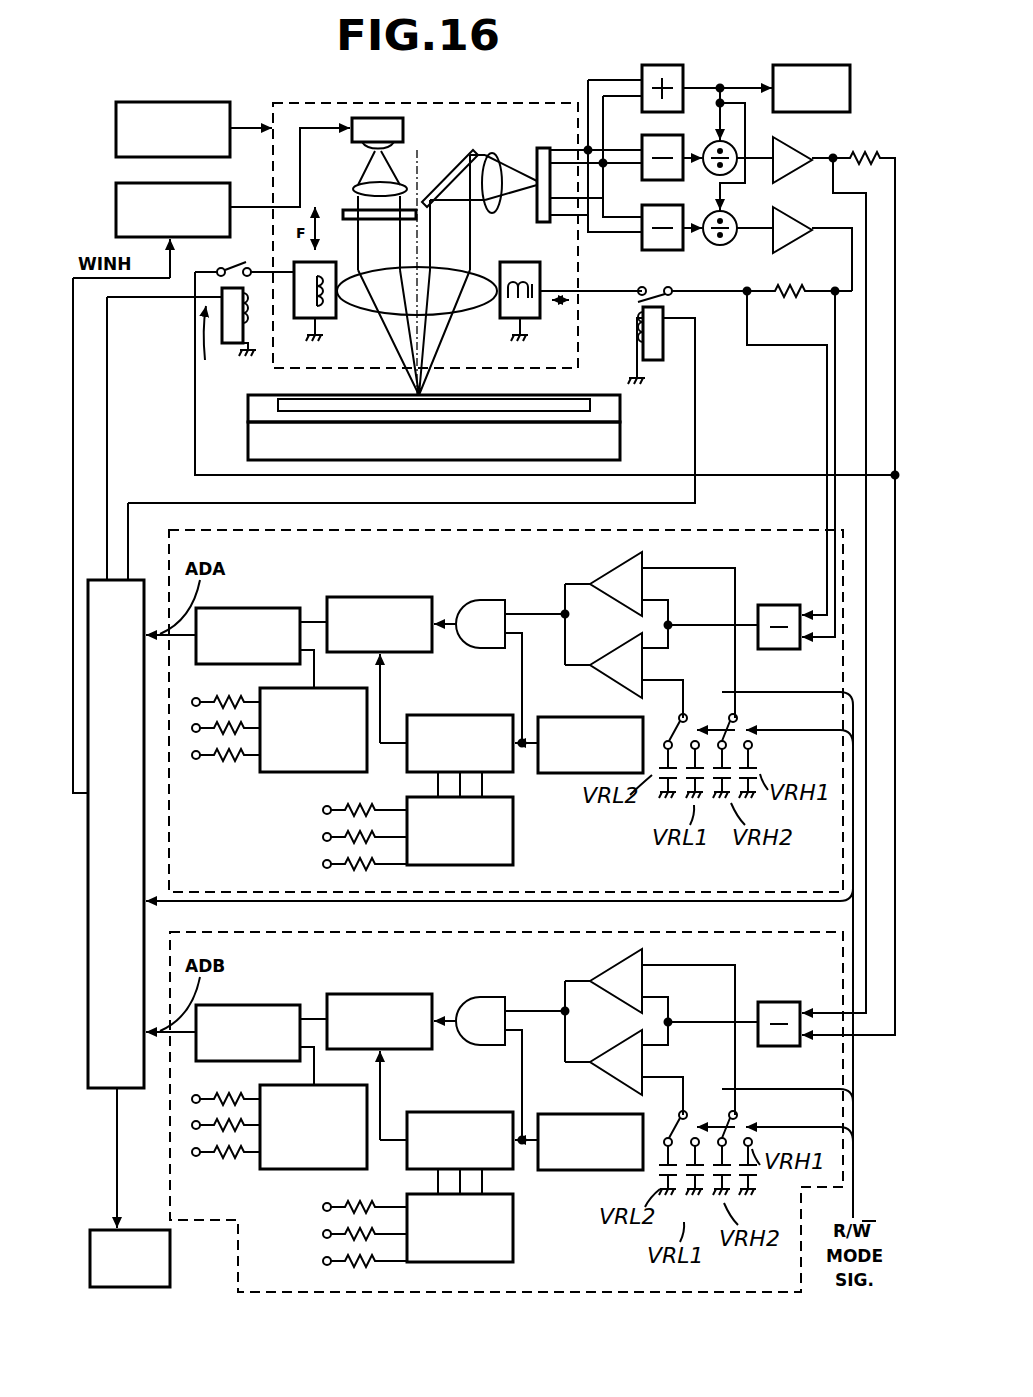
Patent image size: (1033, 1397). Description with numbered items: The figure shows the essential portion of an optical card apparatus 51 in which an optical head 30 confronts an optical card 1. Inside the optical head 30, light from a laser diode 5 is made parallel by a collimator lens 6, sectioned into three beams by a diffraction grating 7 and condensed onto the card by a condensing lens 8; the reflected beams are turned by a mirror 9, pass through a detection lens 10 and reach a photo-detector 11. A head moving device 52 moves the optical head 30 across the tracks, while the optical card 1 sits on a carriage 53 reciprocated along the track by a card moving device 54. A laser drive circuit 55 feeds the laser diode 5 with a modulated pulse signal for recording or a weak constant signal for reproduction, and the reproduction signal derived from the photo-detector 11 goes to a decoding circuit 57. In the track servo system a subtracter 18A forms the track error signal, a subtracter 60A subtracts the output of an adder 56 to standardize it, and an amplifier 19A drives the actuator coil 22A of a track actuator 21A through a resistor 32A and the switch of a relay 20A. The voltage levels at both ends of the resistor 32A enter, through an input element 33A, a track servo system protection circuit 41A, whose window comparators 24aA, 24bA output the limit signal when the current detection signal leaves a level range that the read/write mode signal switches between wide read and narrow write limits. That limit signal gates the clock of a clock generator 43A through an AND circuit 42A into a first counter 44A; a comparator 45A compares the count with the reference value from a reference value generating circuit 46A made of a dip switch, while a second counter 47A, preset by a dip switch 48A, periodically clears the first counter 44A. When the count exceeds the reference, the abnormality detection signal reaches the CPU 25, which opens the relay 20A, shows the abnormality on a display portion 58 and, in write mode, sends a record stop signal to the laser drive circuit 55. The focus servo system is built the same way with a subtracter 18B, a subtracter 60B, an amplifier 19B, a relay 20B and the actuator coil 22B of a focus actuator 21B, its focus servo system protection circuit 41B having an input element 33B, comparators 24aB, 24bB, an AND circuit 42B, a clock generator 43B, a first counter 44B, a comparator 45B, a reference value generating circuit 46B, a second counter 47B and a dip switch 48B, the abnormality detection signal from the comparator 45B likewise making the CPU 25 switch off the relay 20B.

The optical card 1 is at (448, 406).
The laser diode 5 is at (413, 124).
The collimator lens 6 is at (397, 183).
The diffraction grating 7 is at (342, 210).
The condensing lens 8 is at (358, 313).
The mirror 9 is at (452, 172).
The detection lens 10 is at (496, 214).
The photo-detector 11 is at (539, 149).
The subtracter 18A is at (640, 252).
The subtracter 18B is at (640, 182).
The amplifier 19A is at (800, 246).
The amplifier 19B is at (800, 150).
The relay 20A is at (678, 295).
The relay 20B is at (225, 341).
The track actuator 21A is at (500, 318).
The focus actuator 21B is at (296, 306).
The actuator coil 22A is at (545, 353).
The actuator coil 22B is at (272, 266).
The comparator 24aA is at (594, 569).
The comparator 24bA is at (597, 680).
The comparator 24aB is at (642, 1027).
The comparator 24bB is at (605, 1072).
The CPU 25 is at (138, 580).
The optical head 30 is at (576, 103).
The resistor 32A is at (788, 310).
The subtractor 33A is at (780, 605).
The subtractor 33B is at (781, 1002).
The track servo system protection circuit 41A is at (706, 532).
The focus servo system protection circuit 41B is at (406, 929).
The AND circuit 42A is at (470, 600).
The AND circuit 42B is at (501, 1043).
The clock generator 43A is at (556, 775).
The clock generator 43B is at (579, 1174).
The first counter 44A is at (408, 597).
The first counter 44B is at (379, 996).
The comparator 45A is at (281, 608).
The comparator 45B is at (236, 1021).
The reference value generating circuit 46A is at (256, 773).
The reference value generating circuit 46B is at (265, 1155).
The second counter 47A is at (469, 715).
The second counter 47B is at (446, 1110).
The dip switch 48A is at (513, 858).
The dip switch 48B is at (434, 1220).
The optical card apparatus 51 is at (238, 91).
The head moving device 52 is at (115, 127).
The carriage 53 is at (622, 409).
The card moving device 54 is at (247, 444).
The laser drive circuit 55 is at (115, 207).
The adder 56 is at (684, 73).
The decoding circuit 57 is at (851, 86).
The display portion 58 is at (172, 1255).
The subtracter 60A is at (711, 245).
The subtracter 60B is at (711, 173).